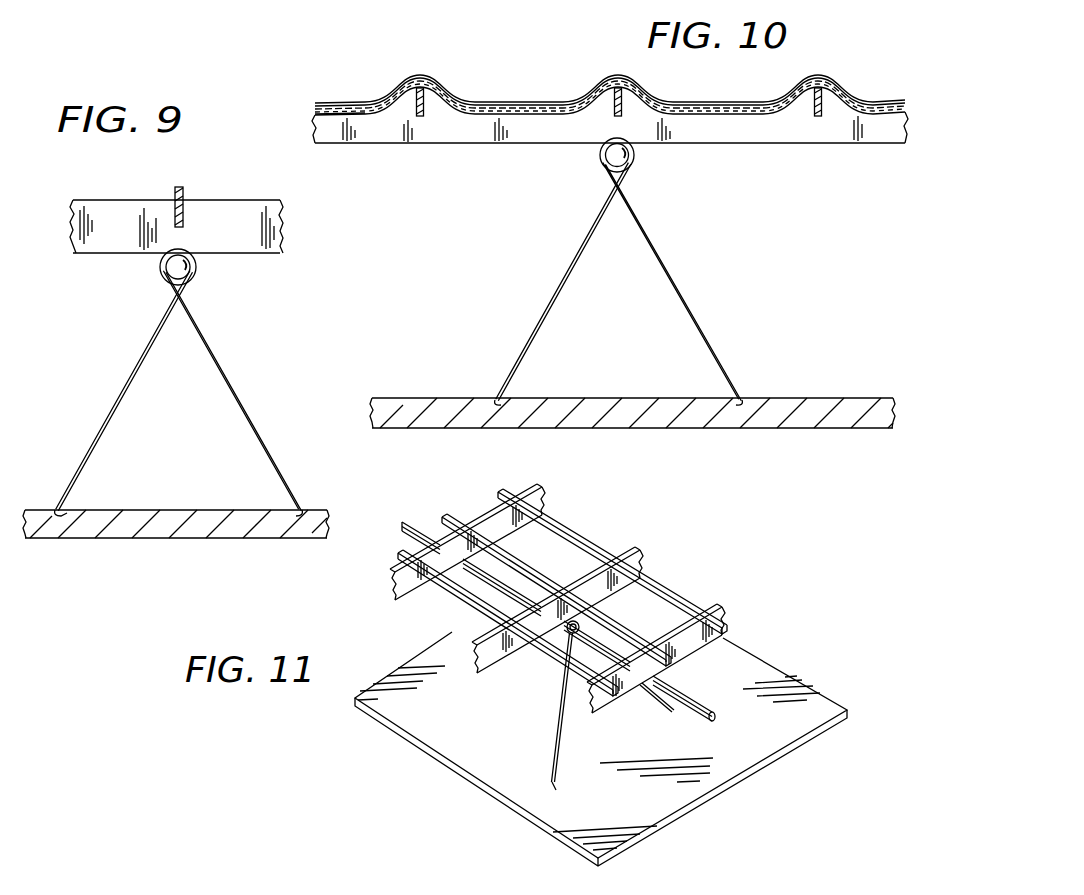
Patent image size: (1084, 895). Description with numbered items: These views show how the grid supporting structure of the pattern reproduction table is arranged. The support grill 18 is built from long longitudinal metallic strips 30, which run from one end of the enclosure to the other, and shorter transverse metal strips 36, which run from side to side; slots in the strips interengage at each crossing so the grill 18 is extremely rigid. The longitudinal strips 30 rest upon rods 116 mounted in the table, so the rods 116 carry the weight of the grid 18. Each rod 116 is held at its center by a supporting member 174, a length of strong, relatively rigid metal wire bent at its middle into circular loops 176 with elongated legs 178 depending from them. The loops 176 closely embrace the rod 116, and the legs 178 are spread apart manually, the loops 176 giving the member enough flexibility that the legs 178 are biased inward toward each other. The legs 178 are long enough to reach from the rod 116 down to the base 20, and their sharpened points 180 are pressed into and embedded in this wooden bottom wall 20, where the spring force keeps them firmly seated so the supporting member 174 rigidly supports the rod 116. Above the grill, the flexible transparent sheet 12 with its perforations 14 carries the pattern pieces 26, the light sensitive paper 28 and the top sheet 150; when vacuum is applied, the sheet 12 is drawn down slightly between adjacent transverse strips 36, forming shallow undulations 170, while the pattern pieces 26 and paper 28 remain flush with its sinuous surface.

In FIG. 10, the flexible transparent sheet 12 is at (352, 112).
In FIG. 10, the perforations 14 is at (400, 111).
In FIG. 11, the support grill 18 is at (591, 597).
In FIG. 9, the base 20 is at (143, 539).
In FIG. 10, the base 20 is at (790, 429).
In FIG. 11, the base 20 is at (737, 781).
In FIG. 10, the pattern pieces 26 is at (566, 110).
In FIG. 10, the light sensitive paper 28 is at (511, 102).
In FIG. 9, the longitudinal metallic strips 30 is at (112, 208).
In FIG. 11, the longitudinal metallic strips 30 is at (548, 500).
In FIG. 9, the transverse metal strips 36 is at (183, 216).
In FIG. 10, the transverse metal strips 36 is at (619, 102).
In FIG. 11, the transverse metal strips 36 is at (728, 632).
In FIG. 9, the rods 116 is at (190, 271).
In FIG. 10, the rods 116 is at (603, 162).
In FIG. 11, the rods 116 is at (718, 713).
In FIG. 10, the top sheet 150 is at (349, 102).
In FIG. 10, the undulations 170 is at (610, 108).
In FIG. 9, the supporting member 174 is at (194, 361).
In FIG. 10, the supporting member 174 is at (614, 271).
In FIG. 11, the supporting member 174 is at (581, 680).
In FIG. 9, the circular loops 176 is at (184, 254).
In FIG. 10, the circular loops 176 is at (634, 168).
In FIG. 11, the circular loops 176 is at (568, 624).
In FIG. 9, the legs 178 is at (133, 370).
In FIG. 10, the legs 178 is at (552, 303).
In FIG. 11, the legs 178 is at (556, 738).
In FIG. 9, the sharpened points 180 is at (62, 513).
In FIG. 10, the sharpened points 180 is at (496, 402).
In FIG. 11, the sharpened points 180 is at (554, 784).